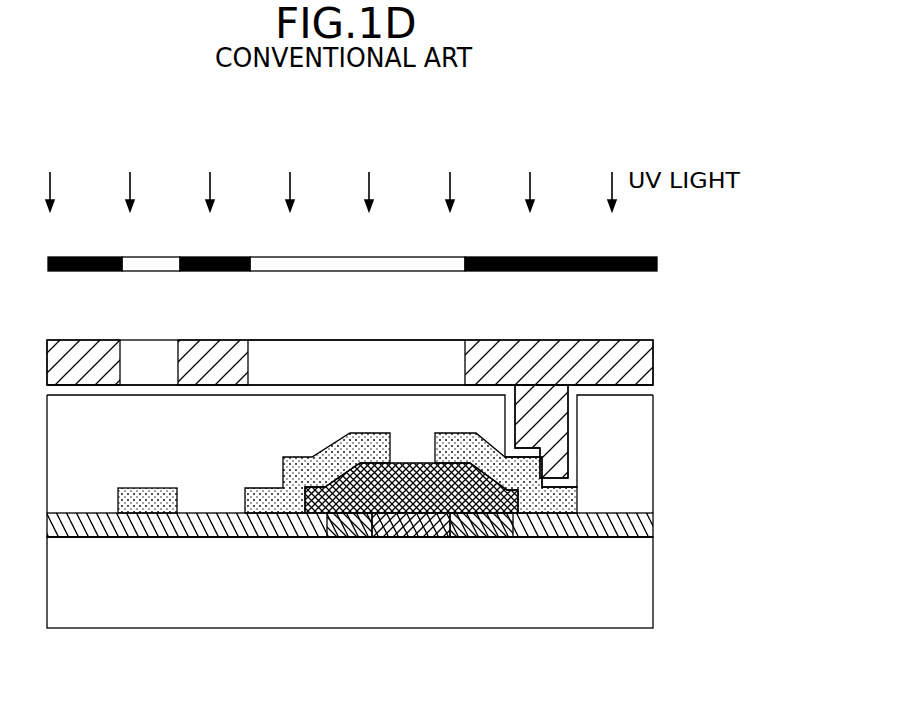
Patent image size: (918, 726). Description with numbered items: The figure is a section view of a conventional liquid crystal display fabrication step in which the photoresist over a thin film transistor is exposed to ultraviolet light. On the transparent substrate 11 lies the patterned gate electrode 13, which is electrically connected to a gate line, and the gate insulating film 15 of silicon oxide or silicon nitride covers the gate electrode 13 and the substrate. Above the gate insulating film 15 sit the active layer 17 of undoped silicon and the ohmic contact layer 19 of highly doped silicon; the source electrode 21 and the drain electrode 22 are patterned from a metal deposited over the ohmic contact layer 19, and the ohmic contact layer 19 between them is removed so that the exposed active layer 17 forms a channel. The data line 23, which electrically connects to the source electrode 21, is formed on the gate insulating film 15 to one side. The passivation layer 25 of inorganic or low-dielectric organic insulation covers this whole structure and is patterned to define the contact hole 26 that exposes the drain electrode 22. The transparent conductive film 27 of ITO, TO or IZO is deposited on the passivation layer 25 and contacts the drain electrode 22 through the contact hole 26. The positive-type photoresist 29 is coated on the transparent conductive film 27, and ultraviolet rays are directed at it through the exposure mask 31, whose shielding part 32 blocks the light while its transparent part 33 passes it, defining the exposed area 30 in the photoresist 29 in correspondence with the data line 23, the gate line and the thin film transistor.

The transparent substrate 11 is at (653, 590).
The gate electrode 13 is at (415, 537).
The gate insulating film 15 is at (735, 524).
The active layer 17 is at (330, 537).
The ohmic contact layer 19 is at (515, 537).
The source electrode 21 is at (277, 513).
The drain electrode 22 is at (557, 500).
The data line 23 is at (150, 513).
The passivation layer 25 is at (653, 458).
The contact hole 26 is at (543, 427).
The transparent conductive film 27 is at (653, 390).
The positive-type photoresist 29 is at (653, 358).
The exposed area 30 is at (420, 352).
The exposure mask 31 is at (386, 236).
The shielding part 32 is at (77, 258).
The transparent part 33 is at (153, 263).